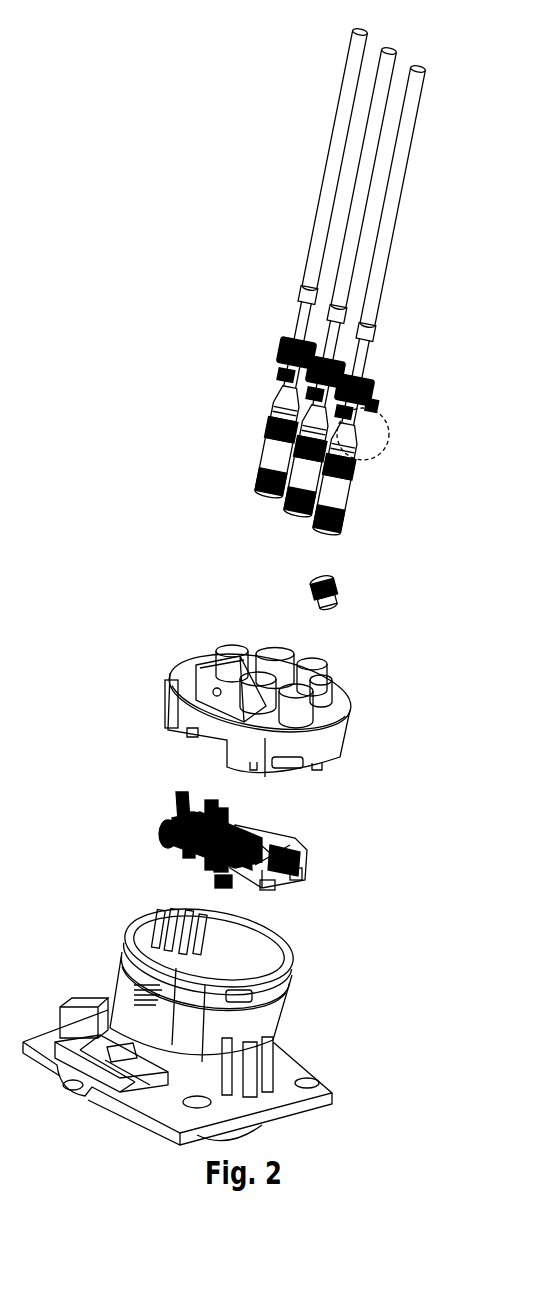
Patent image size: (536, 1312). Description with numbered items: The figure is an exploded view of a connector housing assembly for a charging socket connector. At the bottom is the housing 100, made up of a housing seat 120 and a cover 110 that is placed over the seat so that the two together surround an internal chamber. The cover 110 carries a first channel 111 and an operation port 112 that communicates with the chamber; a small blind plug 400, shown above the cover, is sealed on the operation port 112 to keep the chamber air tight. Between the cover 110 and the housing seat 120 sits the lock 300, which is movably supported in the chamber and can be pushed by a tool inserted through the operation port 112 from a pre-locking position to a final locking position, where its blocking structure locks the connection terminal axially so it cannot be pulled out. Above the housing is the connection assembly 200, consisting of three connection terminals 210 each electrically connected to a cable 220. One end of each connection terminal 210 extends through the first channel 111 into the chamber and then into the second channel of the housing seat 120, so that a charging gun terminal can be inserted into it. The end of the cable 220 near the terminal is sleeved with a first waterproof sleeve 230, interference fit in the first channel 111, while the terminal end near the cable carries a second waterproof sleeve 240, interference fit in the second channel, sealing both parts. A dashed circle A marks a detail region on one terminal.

The housing 100 is at (416, 848).
The cover 110 is at (317, 757).
The first channel 111 is at (220, 646).
The operation port 112 is at (312, 657).
The housing seat 120 is at (292, 987).
The connection assembly 200 is at (160, 277).
The connection terminal 210 is at (268, 455).
The cable 220 is at (305, 270).
The first waterproof sleeve 230 is at (280, 350).
The second waterproof sleeve 240 is at (265, 420).
The lock 300 is at (163, 824).
The blind plug 400 is at (336, 584).
The detail region A is at (378, 440).